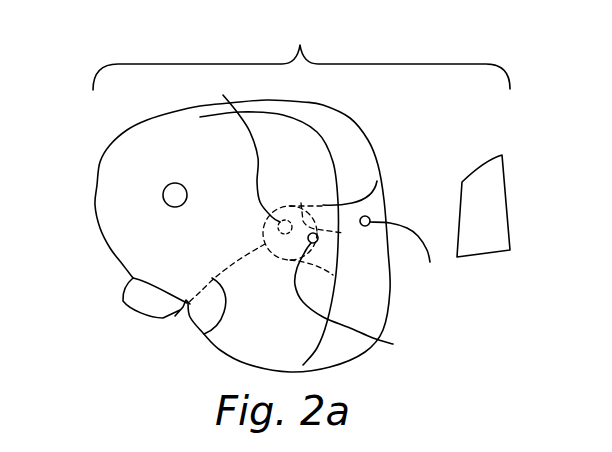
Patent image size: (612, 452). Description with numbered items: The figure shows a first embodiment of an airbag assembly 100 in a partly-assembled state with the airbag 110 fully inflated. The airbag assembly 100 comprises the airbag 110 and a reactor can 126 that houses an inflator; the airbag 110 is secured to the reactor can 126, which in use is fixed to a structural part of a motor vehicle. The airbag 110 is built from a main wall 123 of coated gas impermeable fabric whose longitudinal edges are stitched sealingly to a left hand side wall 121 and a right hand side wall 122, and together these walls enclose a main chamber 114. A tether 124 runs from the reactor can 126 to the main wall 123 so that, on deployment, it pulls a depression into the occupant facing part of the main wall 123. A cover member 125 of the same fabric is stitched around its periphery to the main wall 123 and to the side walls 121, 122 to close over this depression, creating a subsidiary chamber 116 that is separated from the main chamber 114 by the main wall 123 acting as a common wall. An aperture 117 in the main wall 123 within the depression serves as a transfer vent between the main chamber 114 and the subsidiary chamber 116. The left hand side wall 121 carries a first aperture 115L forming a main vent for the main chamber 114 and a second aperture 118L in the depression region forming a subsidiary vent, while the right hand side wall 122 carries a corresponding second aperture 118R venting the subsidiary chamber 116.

The airbag assembly 100 is at (301, 54).
The airbag 110 is at (326, 100).
The main chamber 114 is at (195, 154).
The first aperture 115L is at (163, 195).
The subsidiary chamber 116 is at (327, 210).
The aperture 117 is at (231, 150).
The second aperture 118L is at (374, 295).
The second aperture 118R is at (416, 254).
The left hand side wall 121 is at (113, 250).
The right hand side wall 122 is at (383, 212).
The main wall 123 is at (367, 165).
The tether 124 is at (220, 312).
The cover member 125 is at (474, 178).
The reactor can 126 is at (122, 301).